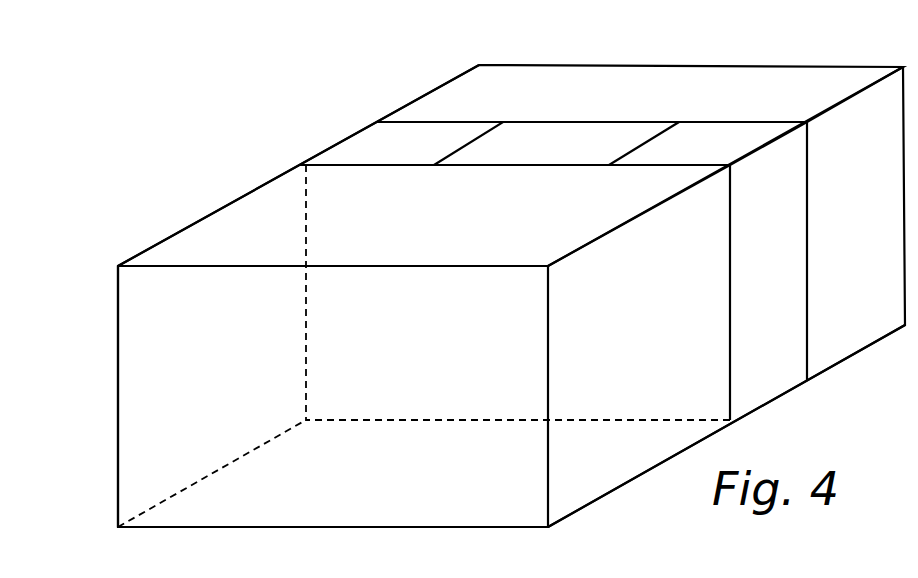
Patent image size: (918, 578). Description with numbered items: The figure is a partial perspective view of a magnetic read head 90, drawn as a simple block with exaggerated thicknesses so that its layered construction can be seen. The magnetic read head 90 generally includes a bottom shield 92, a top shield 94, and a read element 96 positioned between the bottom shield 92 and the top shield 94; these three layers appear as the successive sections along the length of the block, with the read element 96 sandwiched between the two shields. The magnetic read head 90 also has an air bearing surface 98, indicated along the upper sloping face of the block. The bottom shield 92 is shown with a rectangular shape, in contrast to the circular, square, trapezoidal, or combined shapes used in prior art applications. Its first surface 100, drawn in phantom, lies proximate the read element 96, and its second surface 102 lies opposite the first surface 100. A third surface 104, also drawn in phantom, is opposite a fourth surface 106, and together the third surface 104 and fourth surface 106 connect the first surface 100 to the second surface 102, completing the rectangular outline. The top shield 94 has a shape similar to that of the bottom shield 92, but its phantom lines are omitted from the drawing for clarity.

The magnetic read head 90 is at (838, 30).
The bottom shield 92 is at (676, 317).
The top shield 94 is at (868, 222).
The read element 96 is at (570, 152).
The air bearing surface 98 is at (440, 72).
The first surface 100 is at (368, 193).
The second surface 102 is at (297, 498).
The third surface 104 is at (160, 403).
The fourth surface 106 is at (598, 475).